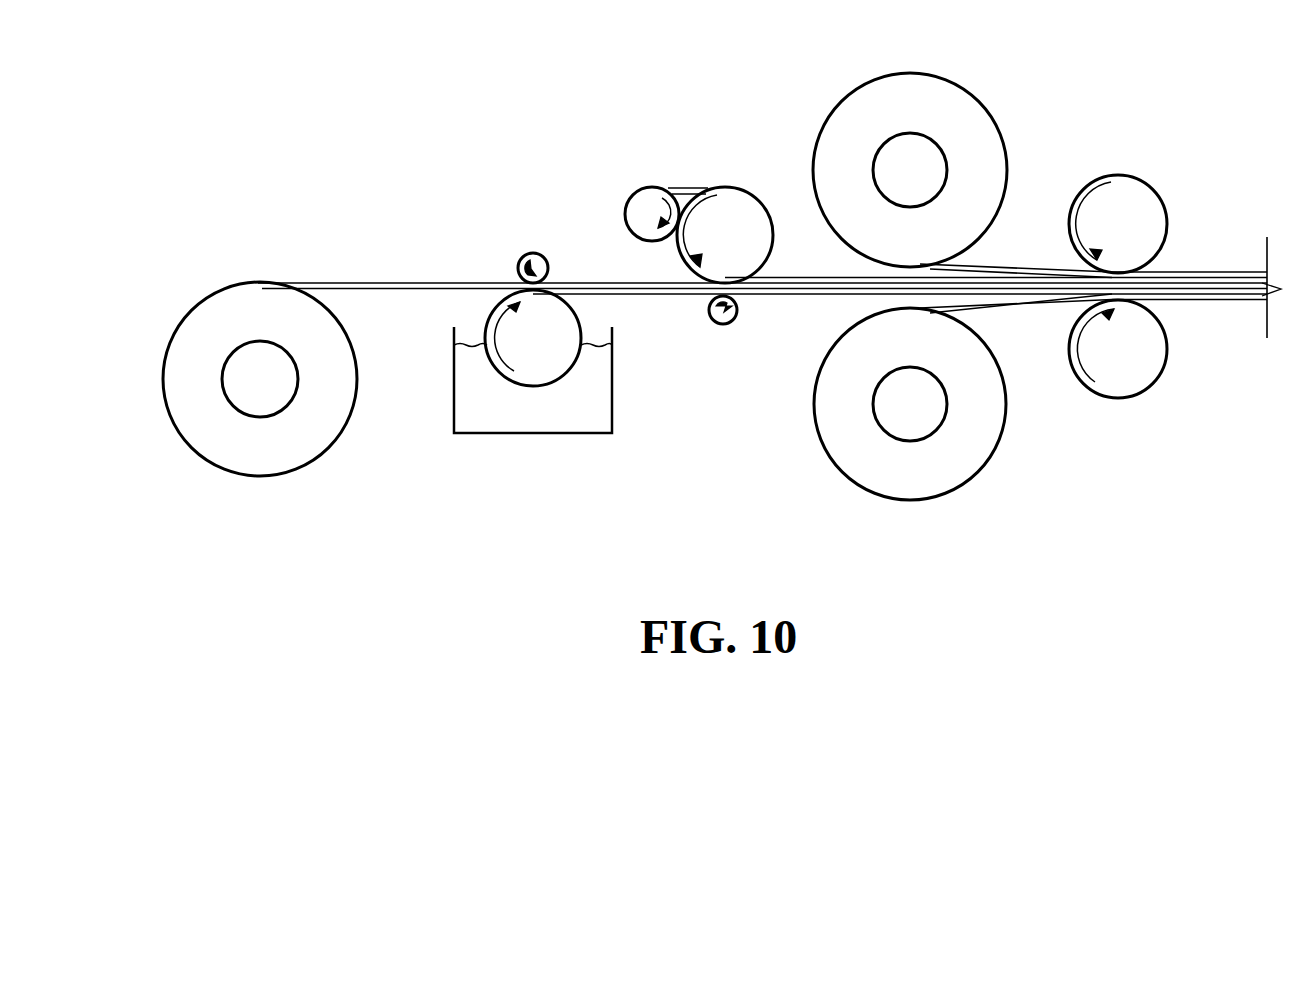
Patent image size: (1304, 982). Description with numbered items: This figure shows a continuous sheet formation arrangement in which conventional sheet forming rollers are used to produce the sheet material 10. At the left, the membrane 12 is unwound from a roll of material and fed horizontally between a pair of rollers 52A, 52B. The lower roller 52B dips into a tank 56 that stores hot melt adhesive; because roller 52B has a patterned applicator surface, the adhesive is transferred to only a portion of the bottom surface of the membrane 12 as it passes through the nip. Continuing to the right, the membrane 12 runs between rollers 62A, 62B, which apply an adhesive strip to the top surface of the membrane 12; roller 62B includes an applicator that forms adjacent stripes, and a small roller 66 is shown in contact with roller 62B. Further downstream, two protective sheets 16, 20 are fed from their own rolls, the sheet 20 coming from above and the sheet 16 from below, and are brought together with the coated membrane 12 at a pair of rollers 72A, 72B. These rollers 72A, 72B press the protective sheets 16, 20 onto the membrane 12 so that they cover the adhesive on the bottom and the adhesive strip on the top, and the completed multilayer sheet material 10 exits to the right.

The sheet material 10 is at (1222, 272).
The membrane 12 is at (388, 282).
The protective sheet 16 is at (912, 485).
The protective sheet 20 is at (912, 85).
The roller 52A is at (533, 253).
The roller 52B is at (572, 318).
The tank 56 is at (535, 425).
The roller 62A is at (724, 325).
The roller 62B is at (734, 200).
The metering roller 66 is at (631, 203).
The roller 72A is at (1125, 185).
The roller 72B is at (1118, 393).